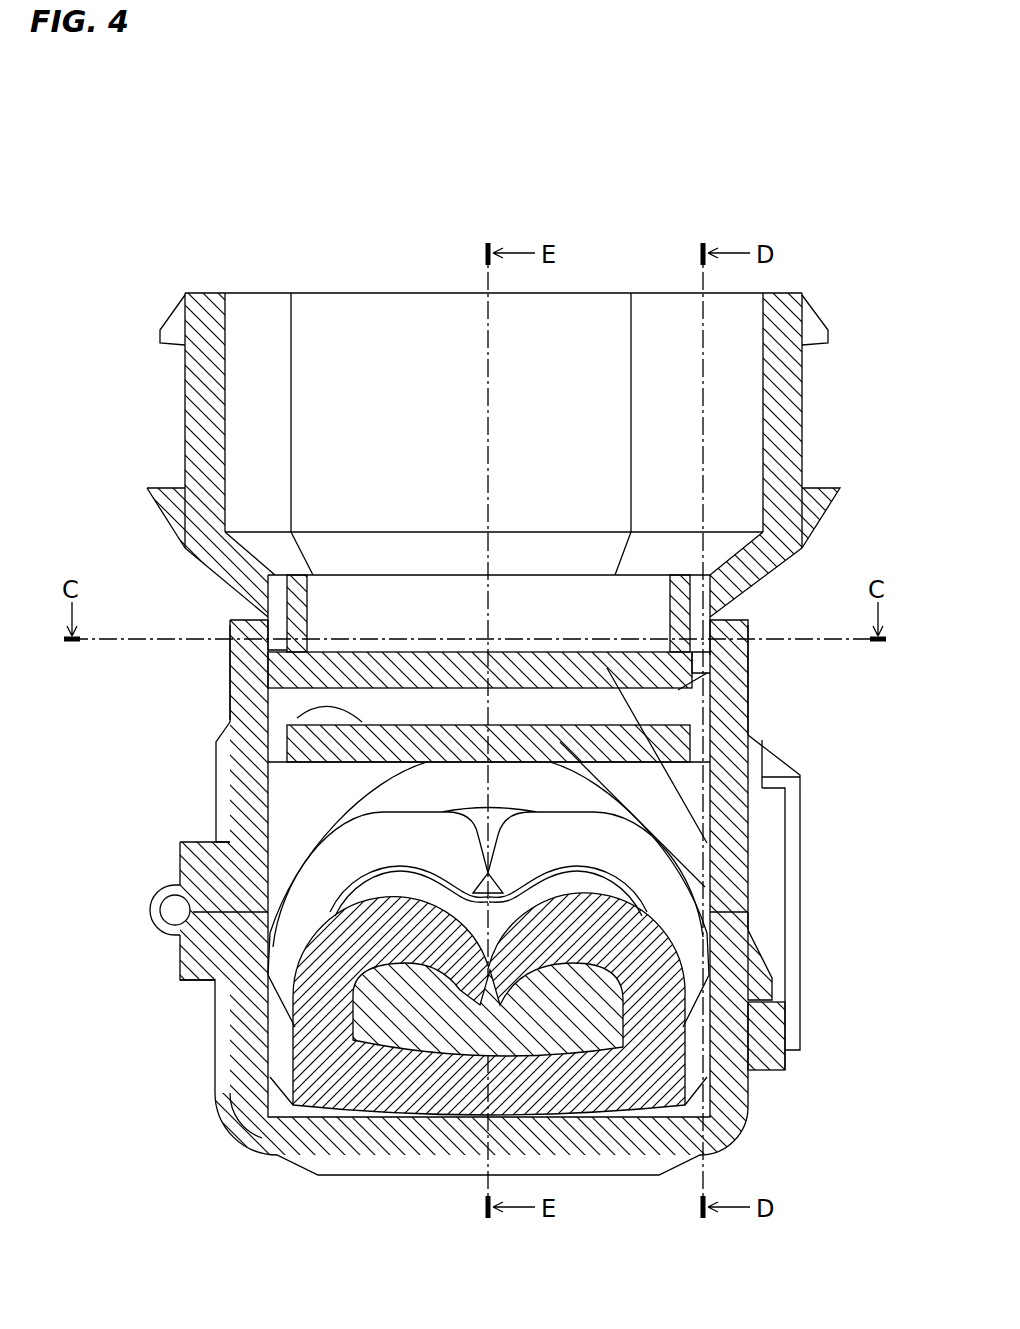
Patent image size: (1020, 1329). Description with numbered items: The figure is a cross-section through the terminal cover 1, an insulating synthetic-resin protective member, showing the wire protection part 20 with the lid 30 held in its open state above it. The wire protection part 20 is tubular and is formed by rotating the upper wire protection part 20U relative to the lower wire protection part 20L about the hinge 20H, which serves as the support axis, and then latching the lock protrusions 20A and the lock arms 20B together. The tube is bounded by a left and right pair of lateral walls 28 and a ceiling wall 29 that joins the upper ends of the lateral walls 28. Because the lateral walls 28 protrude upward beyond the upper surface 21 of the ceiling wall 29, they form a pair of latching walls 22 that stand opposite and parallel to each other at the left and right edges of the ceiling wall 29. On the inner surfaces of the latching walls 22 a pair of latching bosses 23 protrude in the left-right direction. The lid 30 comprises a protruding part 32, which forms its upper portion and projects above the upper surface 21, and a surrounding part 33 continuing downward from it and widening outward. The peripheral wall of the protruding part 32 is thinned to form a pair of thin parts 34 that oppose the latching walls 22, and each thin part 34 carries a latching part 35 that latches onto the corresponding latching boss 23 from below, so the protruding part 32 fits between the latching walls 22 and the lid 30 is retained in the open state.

The terminal cover 1 is at (443, 186).
The wire protection part 20 is at (250, 1002).
The lock protrusions 20A is at (748, 980).
The lock arms 20B is at (767, 1038).
The hinge 20H is at (160, 911).
The upper wire protection part 20U is at (203, 858).
The lower wire protection part 20L is at (202, 958).
The upper surface 21 is at (312, 703).
The latching walls 22 is at (248, 687).
The latching bosses 23 is at (275, 630).
The lateral walls 28 is at (243, 808).
The ceiling wall 29 is at (707, 843).
The lid 30 is at (777, 483).
The protruding part 32 is at (700, 752).
The surrounding part 33 is at (203, 522).
The thin part 34 is at (287, 603).
The latching part 35 is at (282, 664).